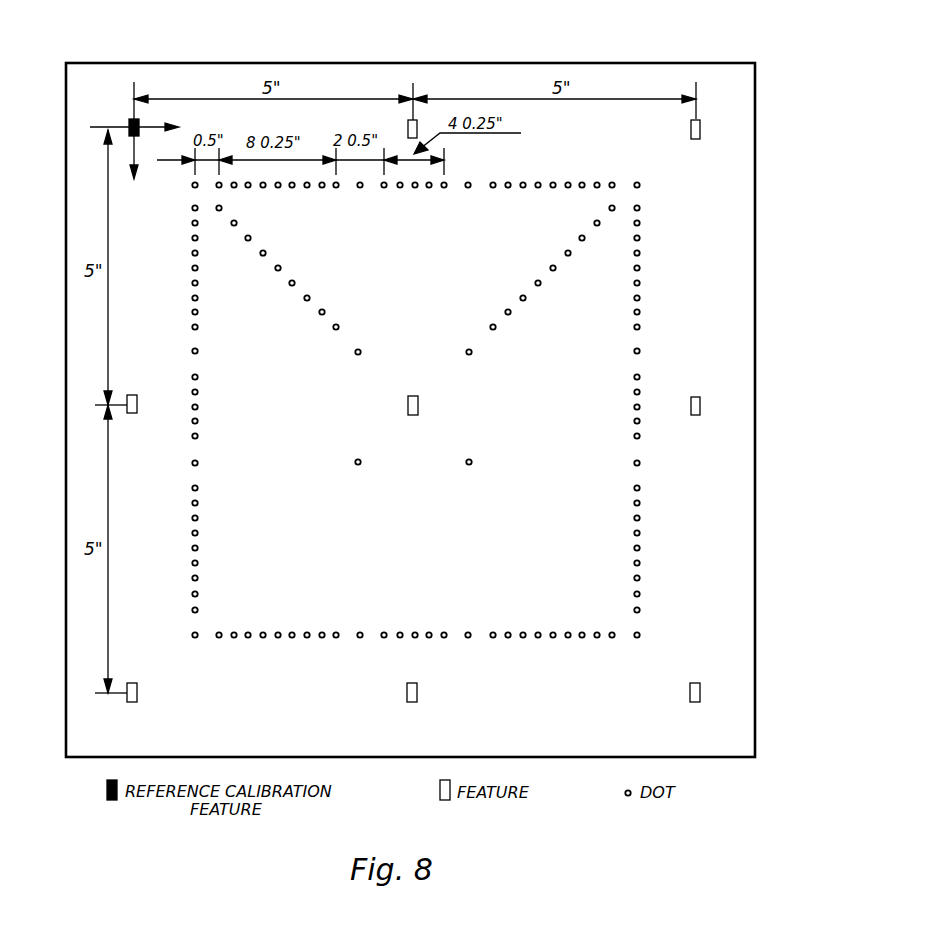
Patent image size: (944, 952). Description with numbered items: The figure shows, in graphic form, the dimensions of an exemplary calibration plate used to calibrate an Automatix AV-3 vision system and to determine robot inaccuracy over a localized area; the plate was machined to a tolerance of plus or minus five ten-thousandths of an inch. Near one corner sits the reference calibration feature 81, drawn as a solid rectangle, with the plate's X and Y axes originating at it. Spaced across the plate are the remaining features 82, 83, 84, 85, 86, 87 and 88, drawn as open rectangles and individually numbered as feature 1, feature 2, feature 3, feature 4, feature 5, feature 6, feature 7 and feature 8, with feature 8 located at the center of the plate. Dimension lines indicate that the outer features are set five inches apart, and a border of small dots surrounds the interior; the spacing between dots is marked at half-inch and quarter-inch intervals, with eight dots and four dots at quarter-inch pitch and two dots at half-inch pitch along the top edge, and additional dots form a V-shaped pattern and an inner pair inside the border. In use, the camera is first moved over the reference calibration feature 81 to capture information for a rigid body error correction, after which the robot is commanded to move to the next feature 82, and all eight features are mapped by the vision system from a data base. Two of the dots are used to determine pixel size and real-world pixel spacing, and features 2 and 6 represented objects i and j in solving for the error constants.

The reference calibration feature 81 is at (132, 118).
The feature 82 is at (87, 434).
The feature 83 is at (151, 709).
The feature 84 is at (438, 710).
The feature 85 is at (743, 669).
The feature 86 is at (743, 381).
The feature 87 is at (745, 107).
The feature 88 is at (399, 78).
The feature 1 is at (139, 404).
The feature 2 is at (139, 692).
The feature 3 is at (419, 692).
The feature 4 is at (702, 692).
The feature 5 is at (703, 406).
The feature 6 is at (703, 129).
The feature 7 is at (419, 121).
The feature 8 is at (422, 405).